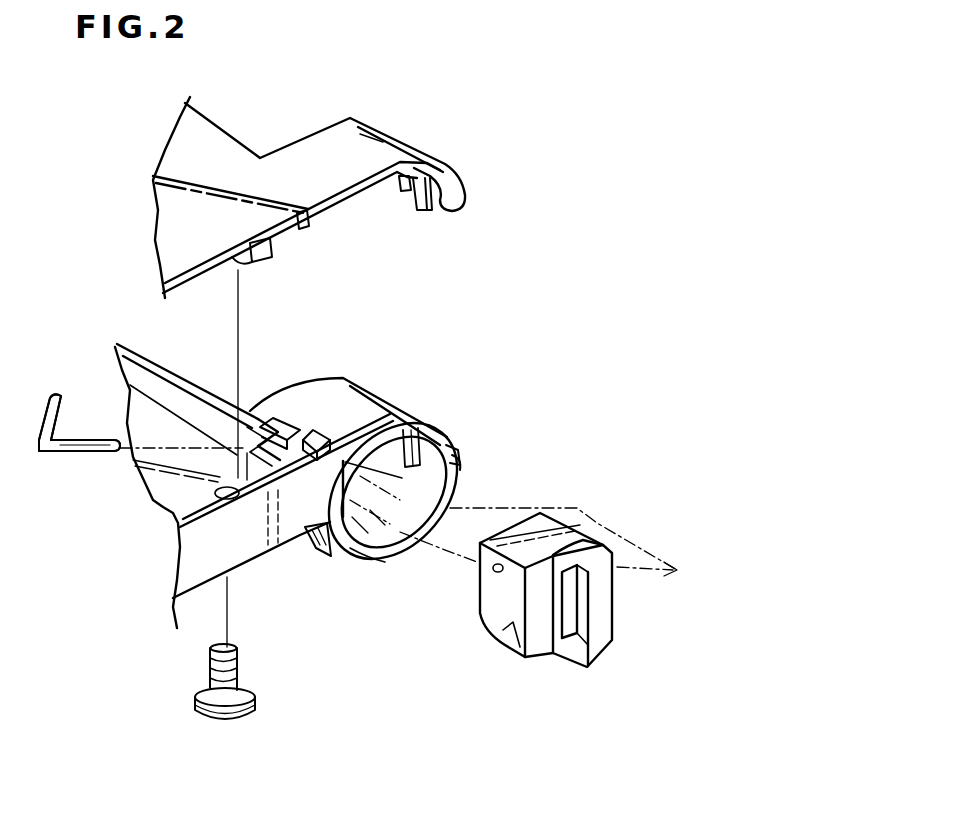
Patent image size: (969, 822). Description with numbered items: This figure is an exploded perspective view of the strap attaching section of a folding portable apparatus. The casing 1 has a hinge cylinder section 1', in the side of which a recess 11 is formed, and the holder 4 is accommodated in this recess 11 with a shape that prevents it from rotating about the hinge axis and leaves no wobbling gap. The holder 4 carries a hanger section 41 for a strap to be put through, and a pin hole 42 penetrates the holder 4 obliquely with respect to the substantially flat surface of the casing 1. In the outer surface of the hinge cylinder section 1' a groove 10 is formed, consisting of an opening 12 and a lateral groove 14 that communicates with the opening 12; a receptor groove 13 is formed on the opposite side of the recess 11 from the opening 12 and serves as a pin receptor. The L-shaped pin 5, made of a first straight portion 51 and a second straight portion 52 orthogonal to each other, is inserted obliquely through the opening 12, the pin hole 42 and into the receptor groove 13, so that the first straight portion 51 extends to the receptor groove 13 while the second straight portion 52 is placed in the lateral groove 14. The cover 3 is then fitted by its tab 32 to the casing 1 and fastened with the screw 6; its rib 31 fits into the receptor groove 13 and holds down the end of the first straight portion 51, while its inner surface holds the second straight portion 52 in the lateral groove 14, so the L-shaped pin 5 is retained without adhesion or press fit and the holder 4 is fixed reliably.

The casing 1 is at (222, 495).
The hinge cylinder section 1' is at (510, 461).
The cover 3 is at (393, 133).
The rib 31 is at (430, 211).
The tab 32 is at (400, 190).
The groove 10 is at (385, 323).
The recess 11 is at (383, 565).
The opening 12 is at (327, 432).
The receptor groove 13 is at (432, 432).
The lateral groove 14 is at (283, 425).
The holder 4 is at (517, 623).
The hanger section 41 is at (603, 637).
The pin hole 42 is at (495, 572).
The L-shaped pin 5 is at (47, 454).
The first straight portion 51 is at (110, 453).
The second straight portion 52 is at (55, 395).
The screw 6 is at (253, 700).